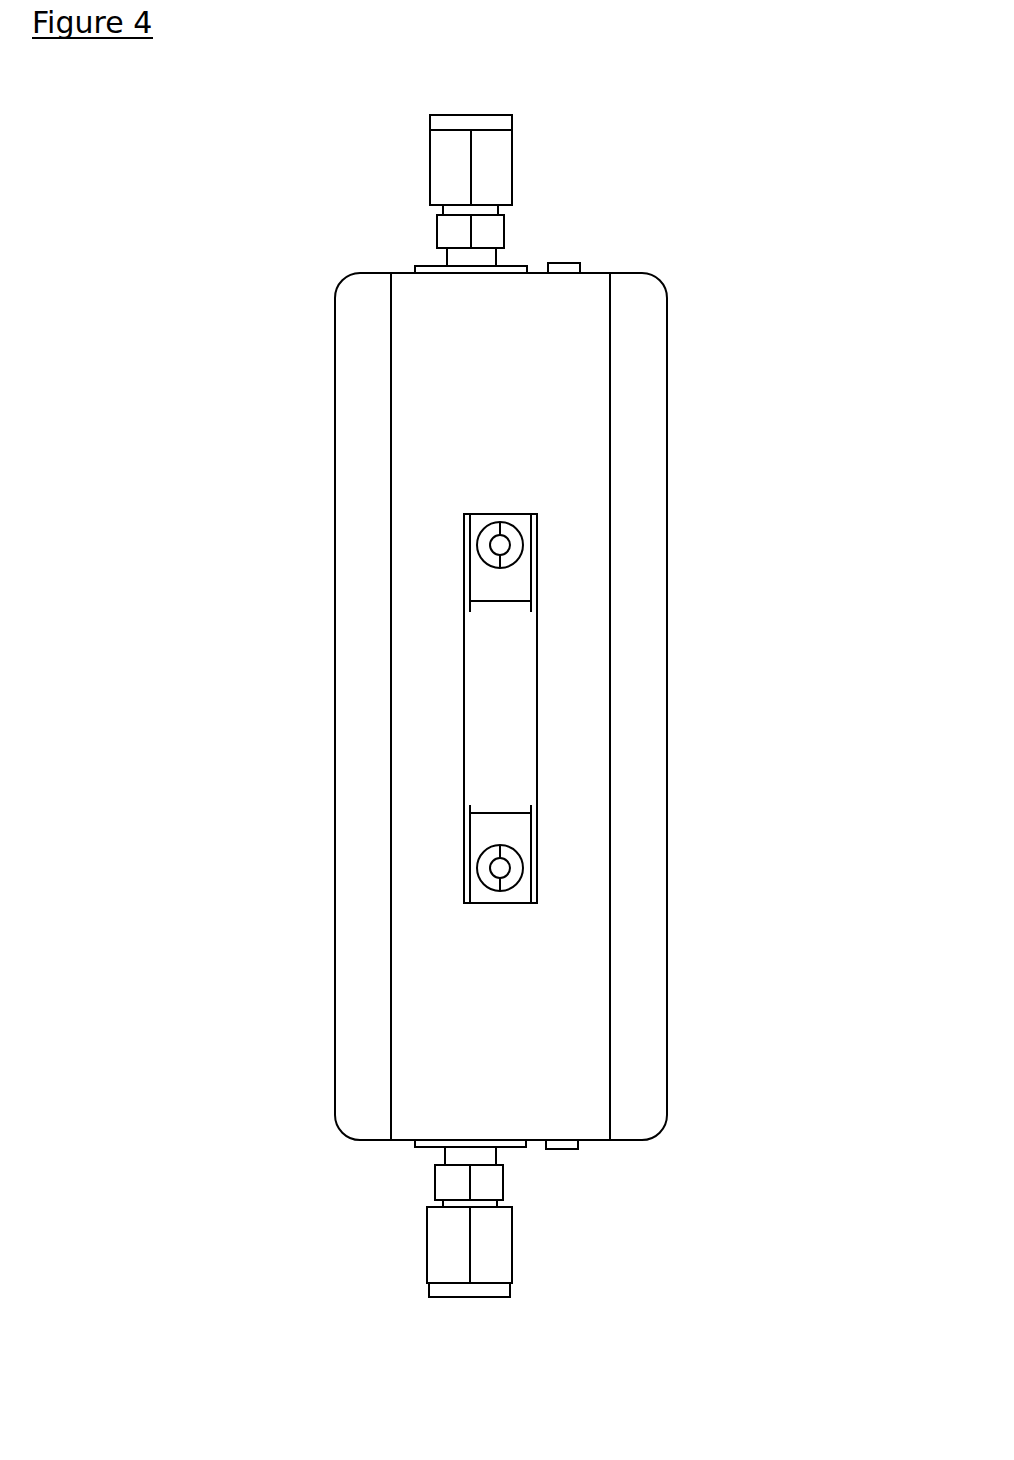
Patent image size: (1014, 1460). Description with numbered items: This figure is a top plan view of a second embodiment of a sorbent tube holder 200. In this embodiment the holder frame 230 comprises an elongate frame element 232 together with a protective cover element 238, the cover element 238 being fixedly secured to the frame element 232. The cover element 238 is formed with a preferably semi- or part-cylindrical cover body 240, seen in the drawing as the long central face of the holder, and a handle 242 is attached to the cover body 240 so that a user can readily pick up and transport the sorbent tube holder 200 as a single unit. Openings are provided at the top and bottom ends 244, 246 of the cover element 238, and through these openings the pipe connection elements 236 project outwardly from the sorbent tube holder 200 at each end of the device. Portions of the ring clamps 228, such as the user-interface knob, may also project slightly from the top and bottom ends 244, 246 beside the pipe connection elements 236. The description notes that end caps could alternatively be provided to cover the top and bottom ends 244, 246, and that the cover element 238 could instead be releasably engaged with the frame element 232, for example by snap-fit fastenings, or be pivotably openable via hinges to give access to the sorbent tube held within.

The sorbent tube holder 200 is at (148, 255).
The ring clamps 228 is at (568, 258).
The holder frame 230 is at (345, 962).
The elongate frame element 232 is at (658, 544).
The pipe connection elements 236 is at (436, 158).
The protective cover element 238 is at (370, 713).
The cover body 240 is at (544, 1018).
The handle 242 is at (544, 729).
The top end 244 is at (538, 245).
The bottom end 246 is at (531, 1179).